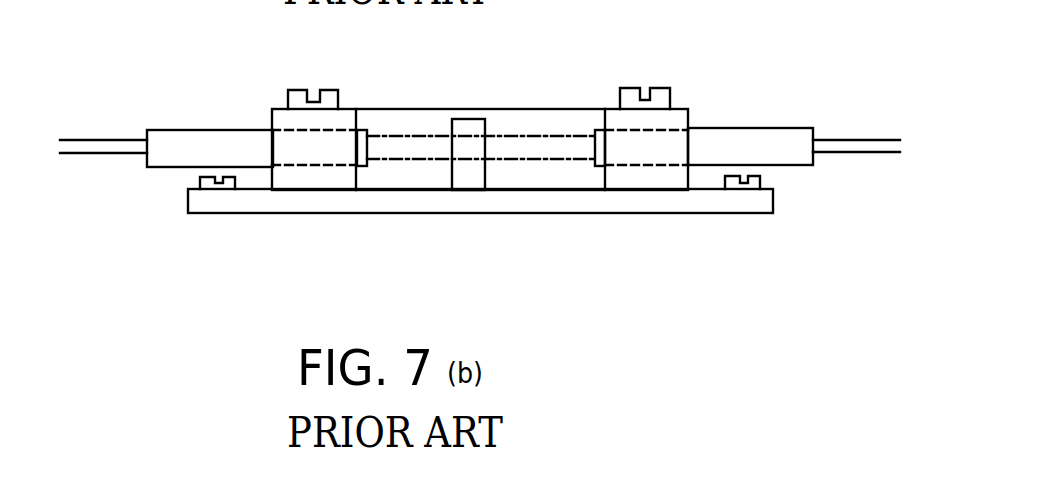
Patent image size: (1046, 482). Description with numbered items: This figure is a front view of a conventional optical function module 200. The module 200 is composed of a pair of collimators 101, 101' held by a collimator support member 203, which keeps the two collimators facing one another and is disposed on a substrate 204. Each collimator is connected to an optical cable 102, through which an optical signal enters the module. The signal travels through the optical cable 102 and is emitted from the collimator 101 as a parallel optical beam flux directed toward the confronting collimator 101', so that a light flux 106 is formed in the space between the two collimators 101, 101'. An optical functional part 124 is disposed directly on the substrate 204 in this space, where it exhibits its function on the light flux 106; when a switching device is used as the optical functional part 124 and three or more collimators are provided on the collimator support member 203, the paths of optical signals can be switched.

The optical function module 200 is at (659, 59).
The collimator support member 203 is at (425, 109).
The light flux 106 is at (380, 160).
The optical functional part 124 is at (485, 173).
The collimator 101' is at (210, 123).
The collimator 101 is at (750, 120).
The optical cable 102 is at (93, 155).
The substrate 204 is at (777, 200).